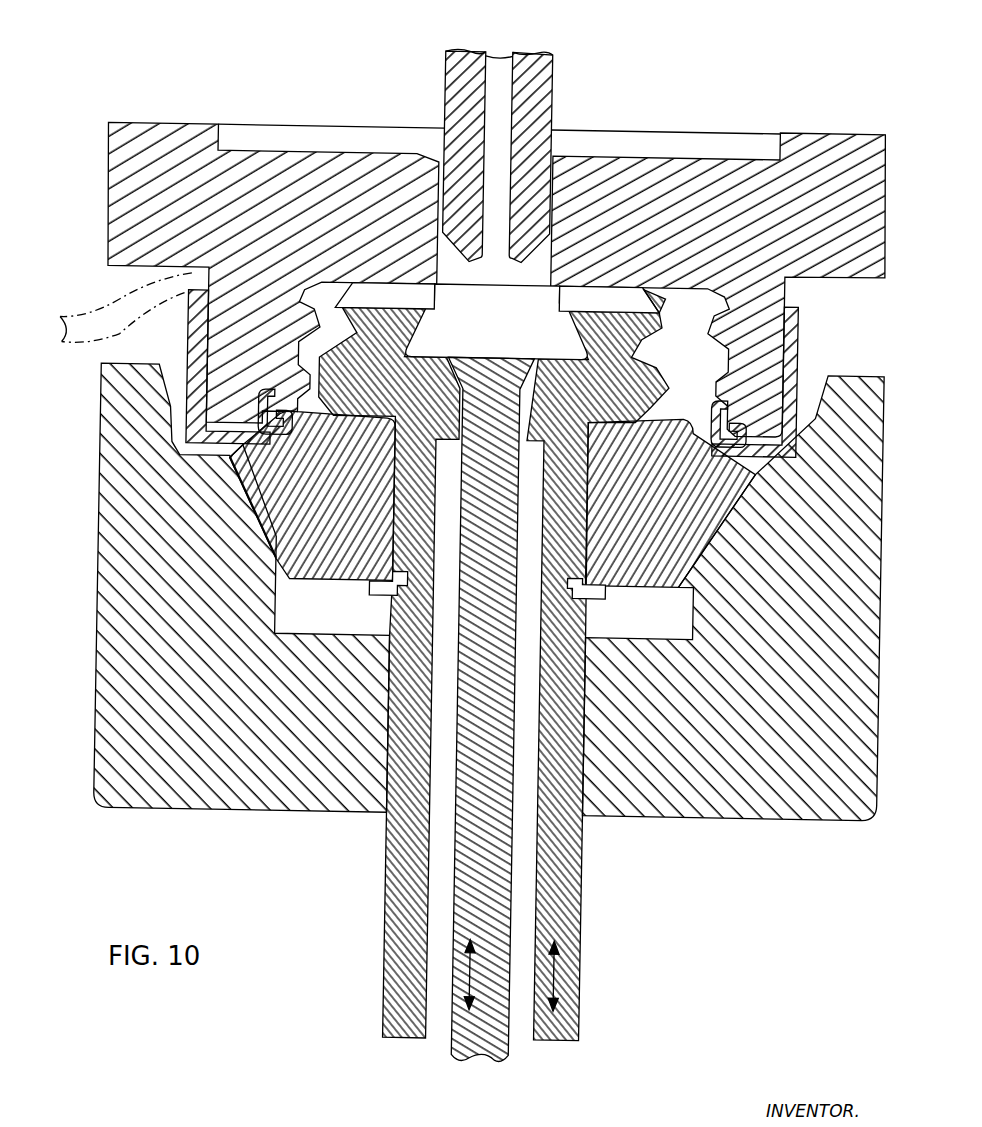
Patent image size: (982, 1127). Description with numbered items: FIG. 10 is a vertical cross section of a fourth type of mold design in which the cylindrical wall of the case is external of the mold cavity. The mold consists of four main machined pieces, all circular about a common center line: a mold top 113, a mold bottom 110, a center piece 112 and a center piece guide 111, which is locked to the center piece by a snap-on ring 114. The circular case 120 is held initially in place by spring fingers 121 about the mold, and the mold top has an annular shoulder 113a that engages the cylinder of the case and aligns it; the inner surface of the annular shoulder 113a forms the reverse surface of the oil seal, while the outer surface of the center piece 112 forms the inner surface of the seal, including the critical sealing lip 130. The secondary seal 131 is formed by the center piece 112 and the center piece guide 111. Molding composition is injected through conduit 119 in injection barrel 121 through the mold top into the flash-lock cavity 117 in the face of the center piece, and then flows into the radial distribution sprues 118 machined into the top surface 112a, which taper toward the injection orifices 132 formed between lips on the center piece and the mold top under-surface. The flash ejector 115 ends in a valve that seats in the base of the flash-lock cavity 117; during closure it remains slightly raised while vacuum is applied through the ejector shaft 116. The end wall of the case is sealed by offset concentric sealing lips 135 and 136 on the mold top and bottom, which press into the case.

The mold bottom 110 is at (237, 822).
The center piece guide 111 is at (352, 592).
The center piece 112 is at (533, 593).
The top surface of the center piece 112a is at (374, 283).
The mold top 113 is at (495, 253).
The annular shoulder 113a is at (714, 345).
The snap-on ring 114 is at (388, 600).
The flash ejector 115 is at (506, 1062).
The ejector shaft 116 is at (440, 1041).
The flash-lock cavity 117 is at (467, 332).
The radial distribution sprues 118 is at (370, 310).
The conduit 119 is at (510, 56).
The circular case 120 is at (194, 344).
The spring fingers; injection barrel 121 is at (548, 86).
The critical sealing lip 130 is at (628, 382).
The secondary seal 131 is at (647, 417).
The injection orifices 132 is at (660, 302).
The sealing lip on the mold top 135 is at (244, 433).
The sealing lip on the mold bottom 136 is at (260, 464).